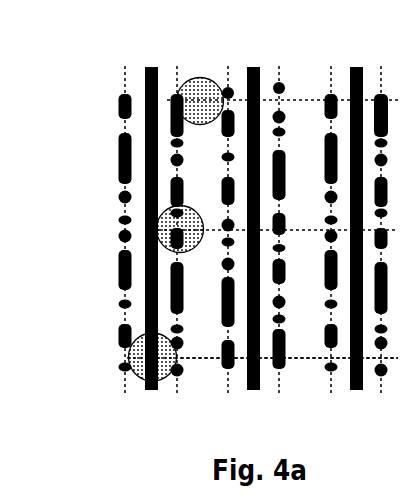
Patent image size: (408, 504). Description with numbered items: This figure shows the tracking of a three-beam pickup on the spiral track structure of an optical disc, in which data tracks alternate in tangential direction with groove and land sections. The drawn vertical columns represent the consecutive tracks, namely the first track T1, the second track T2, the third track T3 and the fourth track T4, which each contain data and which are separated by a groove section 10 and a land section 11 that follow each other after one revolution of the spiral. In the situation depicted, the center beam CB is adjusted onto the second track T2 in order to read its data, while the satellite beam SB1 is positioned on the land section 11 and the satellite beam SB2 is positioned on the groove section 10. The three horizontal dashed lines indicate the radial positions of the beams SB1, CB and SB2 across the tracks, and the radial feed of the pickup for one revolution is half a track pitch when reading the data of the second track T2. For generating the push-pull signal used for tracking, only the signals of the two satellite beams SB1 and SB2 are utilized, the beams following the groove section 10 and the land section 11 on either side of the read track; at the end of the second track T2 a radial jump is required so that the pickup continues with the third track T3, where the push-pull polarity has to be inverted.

The first track T1 is at (123, 65).
The second track T2 is at (177, 65).
The third track T3 is at (228, 65).
The fourth track T4 is at (278, 65).
The satellite beam SB1 is at (158, 100).
The satellite beam SB2 is at (118, 358).
The center beam CB is at (138, 229).
The groove section 10 is at (147, 392).
The land section 11 is at (198, 378).